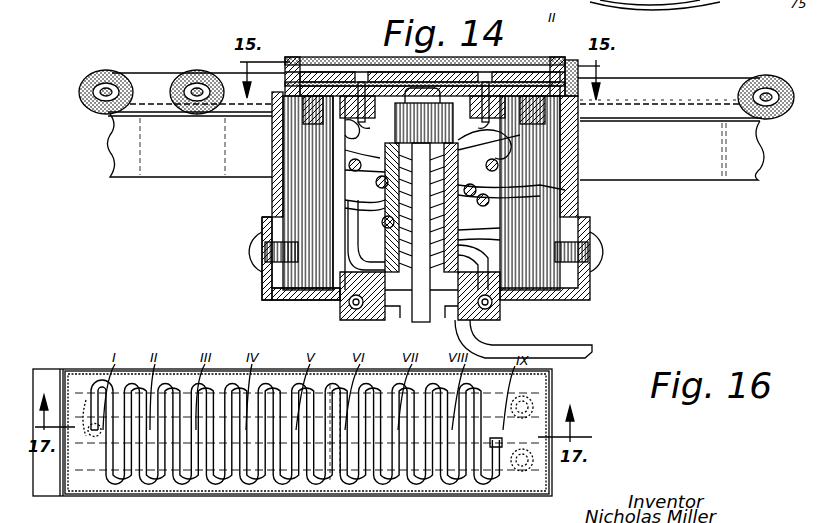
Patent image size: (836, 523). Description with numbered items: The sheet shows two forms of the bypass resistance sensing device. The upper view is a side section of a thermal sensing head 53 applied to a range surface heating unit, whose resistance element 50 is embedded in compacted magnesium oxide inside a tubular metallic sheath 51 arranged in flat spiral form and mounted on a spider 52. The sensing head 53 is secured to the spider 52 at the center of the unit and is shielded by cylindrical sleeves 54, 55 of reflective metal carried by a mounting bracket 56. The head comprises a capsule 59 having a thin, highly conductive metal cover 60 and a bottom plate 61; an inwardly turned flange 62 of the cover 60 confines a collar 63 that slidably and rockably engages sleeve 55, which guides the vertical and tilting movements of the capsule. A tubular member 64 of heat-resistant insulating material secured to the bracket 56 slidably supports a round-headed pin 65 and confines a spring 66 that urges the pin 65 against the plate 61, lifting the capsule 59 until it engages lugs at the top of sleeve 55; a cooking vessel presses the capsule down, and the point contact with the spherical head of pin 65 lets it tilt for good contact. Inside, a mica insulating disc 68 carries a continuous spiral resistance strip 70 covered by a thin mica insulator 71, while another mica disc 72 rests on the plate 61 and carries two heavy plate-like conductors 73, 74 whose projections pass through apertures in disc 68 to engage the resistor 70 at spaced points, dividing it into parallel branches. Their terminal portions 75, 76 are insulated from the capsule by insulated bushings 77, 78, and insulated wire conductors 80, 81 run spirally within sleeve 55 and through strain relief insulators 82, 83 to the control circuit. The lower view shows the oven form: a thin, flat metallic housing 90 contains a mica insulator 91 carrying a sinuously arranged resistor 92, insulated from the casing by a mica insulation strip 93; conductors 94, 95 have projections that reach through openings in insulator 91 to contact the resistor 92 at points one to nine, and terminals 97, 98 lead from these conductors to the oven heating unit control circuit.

In FIG. 14, the resistance element 50 is at (200, 72).
In FIG. 14, the tubular metallic sheath 51 is at (212, 73).
In FIG. 14, the spider 52 is at (156, 163).
In FIG. 14, the sensing head 53 is at (580, 140).
In FIG. 14, the cylindrical sleeve 54 is at (580, 165).
In FIG. 14, the cylindrical sleeve 55 is at (540, 192).
In FIG. 14, the mounting bracket 56 is at (588, 296).
In FIG. 14, the capsule 59 is at (298, 57).
In FIG. 14, the cover 60 is at (545, 57).
In FIG. 14, the bottom plate 61 is at (278, 138).
In FIG. 14, the inwardly turned flange 62 is at (272, 124).
In FIG. 14, the collar 63 is at (292, 150).
In FIG. 14, the tubular member 64 is at (352, 186).
In FIG. 14, the round-headed pin 65 is at (412, 318).
In FIG. 14, the spring 66 is at (505, 224).
In FIG. 14, the mica insulating disc 68 is at (568, 70).
In FIG. 14, the spiral resistance strip 70 is at (352, 57).
In FIG. 14, the mica insulator 71 is at (326, 72).
In FIG. 14, the mica insulating disc 72 is at (600, 66).
In FIG. 14, the plate-like conductor 73 is at (384, 60).
In FIG. 14, the plate-like conductor 74 is at (486, 60).
In FIG. 14, the terminal portion 75 is at (300, 165).
In FIG. 14, the terminal portion 76 is at (582, 110).
In FIG. 14, the insulated bushing 77 is at (333, 172).
In FIG. 14, the insulated bushing 78 is at (540, 110).
In FIG. 14, the insulated wire conductor 80 is at (372, 140).
In FIG. 14, the insulated wire conductor 81 is at (515, 152).
In FIG. 14, the strain relief insulator 82 is at (500, 310).
In FIG. 14, the strain relief insulator 83 is at (340, 304).
In FIG. 16, the metallic housing 90 is at (560, 385).
In FIG. 16, the insulator 91 is at (295, 385).
In FIG. 16, the sinuously arranged resistor 92 is at (88, 392).
In FIG. 16, the mica insulation strip 93 is at (322, 522).
In FIG. 16, the conductor 94 is at (192, 385).
In FIG. 16, the conductor 95 is at (405, 485).
In FIG. 16, the terminal 97 is at (534, 404).
In FIG. 16, the terminal 98 is at (534, 470).